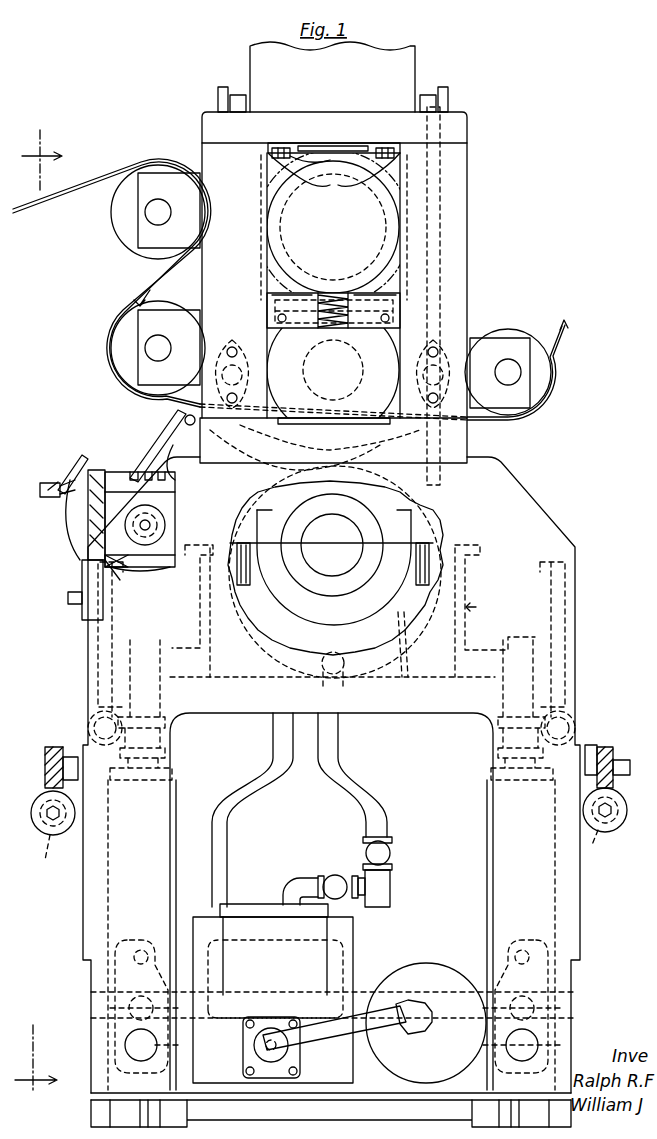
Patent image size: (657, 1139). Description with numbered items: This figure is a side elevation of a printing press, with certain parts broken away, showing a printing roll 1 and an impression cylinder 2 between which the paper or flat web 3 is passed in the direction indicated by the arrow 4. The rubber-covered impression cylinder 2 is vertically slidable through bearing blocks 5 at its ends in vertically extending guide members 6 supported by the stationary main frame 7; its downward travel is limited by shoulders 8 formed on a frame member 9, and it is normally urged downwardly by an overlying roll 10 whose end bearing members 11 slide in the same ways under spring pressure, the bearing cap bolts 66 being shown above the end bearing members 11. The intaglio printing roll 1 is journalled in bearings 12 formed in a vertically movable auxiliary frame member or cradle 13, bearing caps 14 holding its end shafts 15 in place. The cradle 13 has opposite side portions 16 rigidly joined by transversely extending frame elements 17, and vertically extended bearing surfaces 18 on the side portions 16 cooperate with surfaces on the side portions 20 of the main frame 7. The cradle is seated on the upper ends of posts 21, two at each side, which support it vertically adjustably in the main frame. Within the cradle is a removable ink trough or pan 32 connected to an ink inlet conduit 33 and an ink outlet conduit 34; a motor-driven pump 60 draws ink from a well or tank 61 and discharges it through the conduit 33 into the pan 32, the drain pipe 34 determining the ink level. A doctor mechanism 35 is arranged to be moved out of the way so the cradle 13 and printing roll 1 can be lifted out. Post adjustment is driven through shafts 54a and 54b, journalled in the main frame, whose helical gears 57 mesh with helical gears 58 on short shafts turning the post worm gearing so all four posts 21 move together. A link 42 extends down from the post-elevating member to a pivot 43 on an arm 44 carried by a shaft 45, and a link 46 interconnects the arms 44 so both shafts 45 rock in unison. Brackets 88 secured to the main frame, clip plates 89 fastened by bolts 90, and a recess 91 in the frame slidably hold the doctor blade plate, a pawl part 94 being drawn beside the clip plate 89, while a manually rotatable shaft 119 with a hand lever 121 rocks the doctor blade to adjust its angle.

The printing roll 1 is at (433, 507).
The impression cylinder 2 is at (317, 418).
The paper or flat web 3 is at (60, 205).
The arrow 4 is at (148, 290).
The bearing blocks 5 is at (305, 330).
The guide members 6 is at (268, 250).
The main frame 7 is at (575, 618).
The shoulders 8 is at (270, 412).
The frame member 9 is at (204, 117).
The overlying roll 10 is at (342, 150).
The end bearing members 11 is at (296, 160).
The bearings 12 is at (345, 592).
The auxiliary frame member or cradle 13 is at (476, 606).
The bearing caps 14 is at (270, 527).
The end shafts 15 is at (355, 541).
The side portions 16 is at (310, 617).
The transversely extending frame elements 17 is at (200, 618).
The bearing surfaces 18 is at (240, 582).
The side portions of the main frame 20 is at (407, 713).
The posts 21 is at (160, 697).
The ink trough or pan 32 is at (406, 660).
The ink inlet conduit 33 is at (338, 740).
The ink outlet conduit 34 is at (273, 740).
The doctor mechanism 35 is at (147, 448).
The link 42 is at (576, 980).
The pivot 43 is at (110, 1010).
The arm 44 is at (110, 1028).
The shaft 45 is at (125, 1048).
The link 46 is at (468, 995).
The shaft 54a is at (608, 849).
The shaft 54b is at (46, 859).
The helical gears 57 is at (42, 832).
The helical gears 58 is at (58, 738).
The motor-driven pump 60 is at (428, 965).
The well or tank 61 is at (231, 1063).
The bearing cap bolts 66 is at (334, 174).
The brackets 88 is at (118, 472).
The clip plates 89 is at (82, 580).
The bolts 90 is at (68, 598).
The recess 91 is at (110, 575).
The pawl spring 94 is at (135, 562).
The manually rotatable shaft 119 is at (55, 500).
The hand lever or arm 121 is at (70, 462).